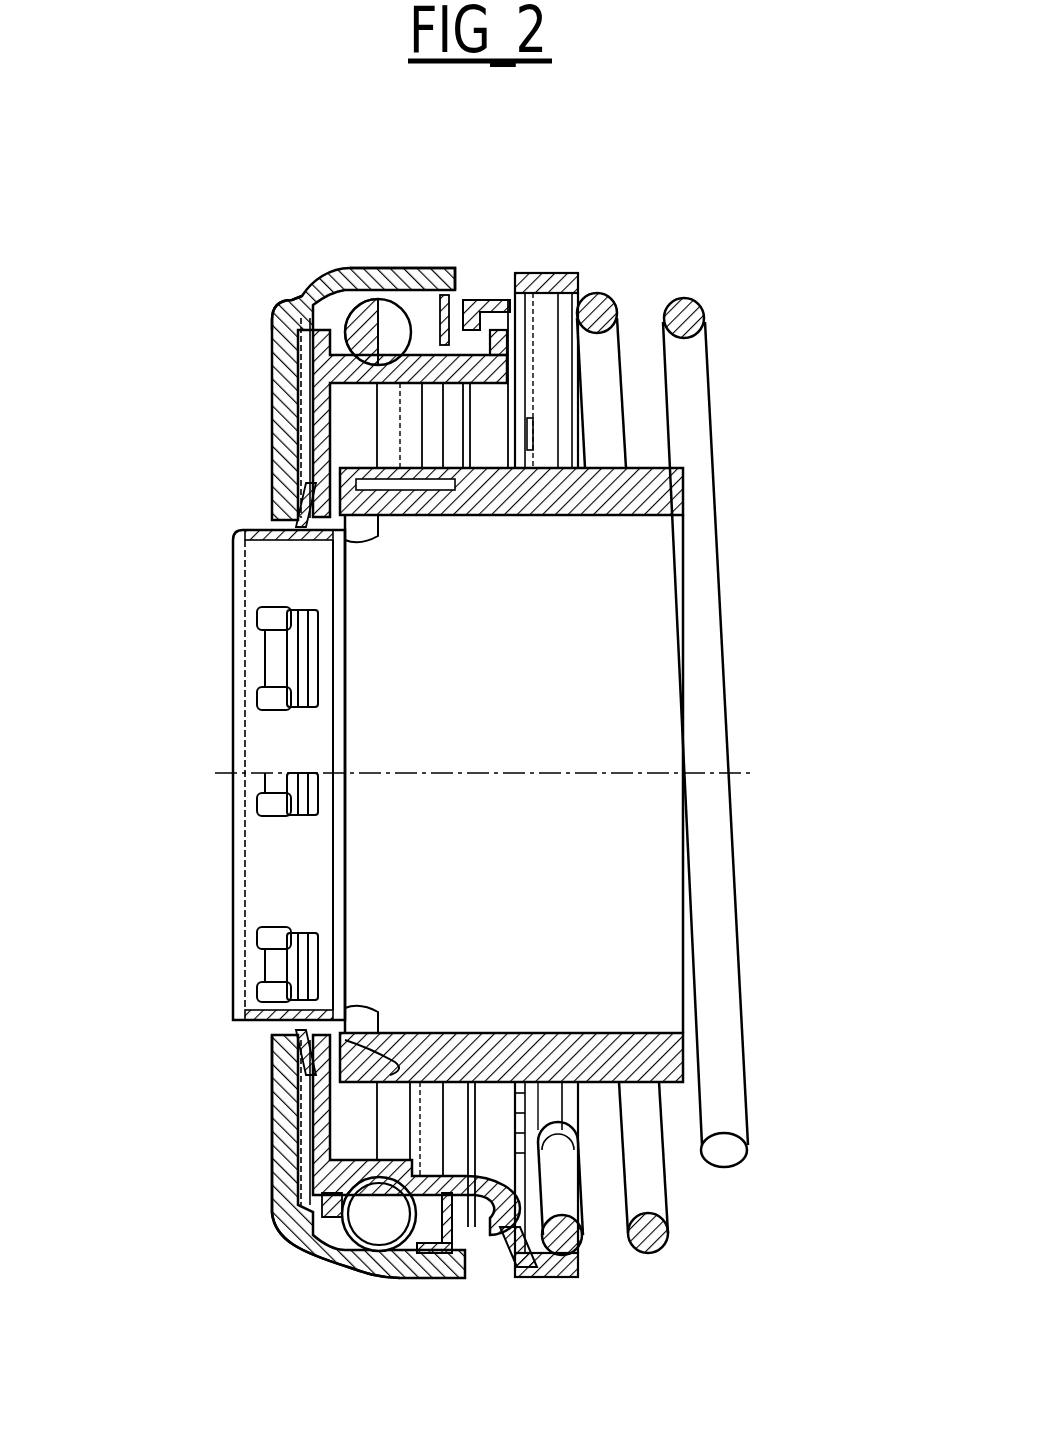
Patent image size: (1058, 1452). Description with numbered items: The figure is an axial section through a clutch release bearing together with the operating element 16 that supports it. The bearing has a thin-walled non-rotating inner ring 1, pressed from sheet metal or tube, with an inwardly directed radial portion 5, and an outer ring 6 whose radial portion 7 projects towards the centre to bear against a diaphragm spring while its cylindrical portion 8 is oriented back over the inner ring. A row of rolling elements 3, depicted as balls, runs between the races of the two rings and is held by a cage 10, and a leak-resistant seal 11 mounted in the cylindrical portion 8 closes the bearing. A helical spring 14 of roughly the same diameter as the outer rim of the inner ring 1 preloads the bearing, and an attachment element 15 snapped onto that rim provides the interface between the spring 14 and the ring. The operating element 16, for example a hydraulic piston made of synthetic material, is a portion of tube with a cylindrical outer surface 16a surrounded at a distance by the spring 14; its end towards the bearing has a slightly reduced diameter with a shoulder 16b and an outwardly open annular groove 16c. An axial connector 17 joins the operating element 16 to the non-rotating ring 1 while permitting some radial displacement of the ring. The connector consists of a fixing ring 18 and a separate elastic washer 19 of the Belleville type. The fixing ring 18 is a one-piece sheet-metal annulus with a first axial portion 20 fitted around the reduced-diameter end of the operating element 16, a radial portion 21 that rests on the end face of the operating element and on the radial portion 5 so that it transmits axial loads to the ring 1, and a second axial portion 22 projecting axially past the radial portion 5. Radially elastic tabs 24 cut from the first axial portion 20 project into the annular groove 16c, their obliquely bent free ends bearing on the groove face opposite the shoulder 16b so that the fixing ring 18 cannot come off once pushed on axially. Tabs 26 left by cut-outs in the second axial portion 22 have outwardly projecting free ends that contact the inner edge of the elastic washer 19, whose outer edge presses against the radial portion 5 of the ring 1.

The non-rotating rolling-contact bearing ring 1 is at (308, 388).
The rolling elements 3 is at (375, 1213).
The inwardly directed radial portion 5 is at (298, 434).
The outer ring 6 is at (288, 300).
The radial portion 7 is at (275, 1113).
The cylindrical portion 8 is at (388, 268).
The cage 10 is at (325, 1203).
The leak-resistant seal 11 is at (463, 1240).
The spring 14 is at (655, 1252).
The attachment element 15 is at (505, 300).
The operating element 16 is at (681, 487).
The outer surface 16a is at (653, 468).
The shoulder 16b is at (463, 466).
The annular groove 16c is at (400, 483).
The axial connector 17 is at (232, 689).
The fixing ring 18 is at (237, 752).
The elastic washer 19 is at (300, 520).
The first axial portion 20 is at (303, 452).
The radial portion 21 is at (378, 528).
The second axial portion 22 is at (280, 850).
The tabs 24 is at (400, 1060).
The tabs 26 is at (265, 632).